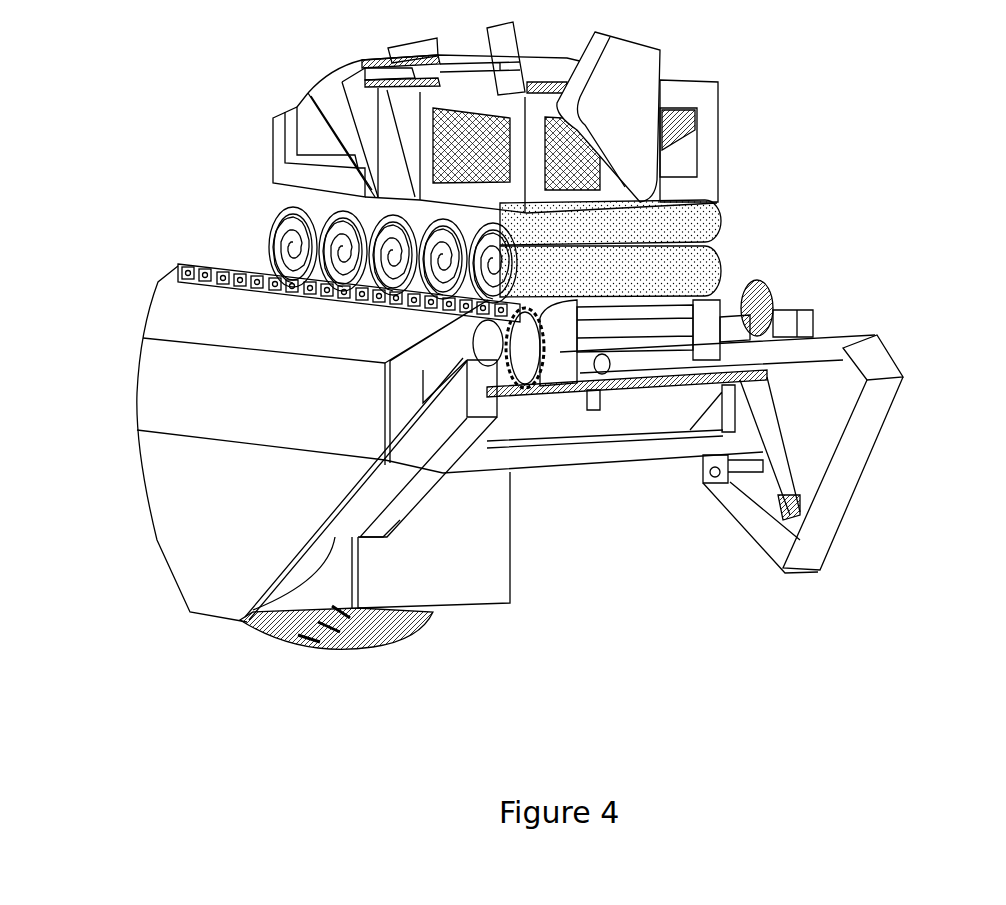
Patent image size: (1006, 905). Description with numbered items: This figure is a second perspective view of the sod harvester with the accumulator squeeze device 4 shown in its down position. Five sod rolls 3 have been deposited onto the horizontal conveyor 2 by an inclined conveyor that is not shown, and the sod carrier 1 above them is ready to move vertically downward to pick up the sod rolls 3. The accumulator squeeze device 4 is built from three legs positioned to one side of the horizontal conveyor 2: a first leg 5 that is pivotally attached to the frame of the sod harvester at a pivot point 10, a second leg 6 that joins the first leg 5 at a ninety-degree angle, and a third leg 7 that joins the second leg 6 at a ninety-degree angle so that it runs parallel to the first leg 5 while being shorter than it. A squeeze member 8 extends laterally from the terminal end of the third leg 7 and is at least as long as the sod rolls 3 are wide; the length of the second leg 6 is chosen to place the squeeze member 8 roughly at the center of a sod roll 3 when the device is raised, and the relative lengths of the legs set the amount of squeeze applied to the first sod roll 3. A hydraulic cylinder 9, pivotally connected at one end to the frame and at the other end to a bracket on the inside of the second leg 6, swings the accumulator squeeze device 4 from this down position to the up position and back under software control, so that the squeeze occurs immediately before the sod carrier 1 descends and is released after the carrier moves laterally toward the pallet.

The sod carrier 1 is at (700, 190).
The horizontal conveyor bed 2 is at (748, 298).
The sod rolls 3 is at (720, 228).
The sod roll accumulator squeeze device 4 is at (880, 520).
The first leg 5 is at (745, 512).
The second leg 6 is at (855, 462).
The third leg 7 is at (875, 368).
The squeeze member 8 is at (810, 352).
The hydraulic cylinder 9 is at (778, 445).
The pivot point 10 is at (705, 480).